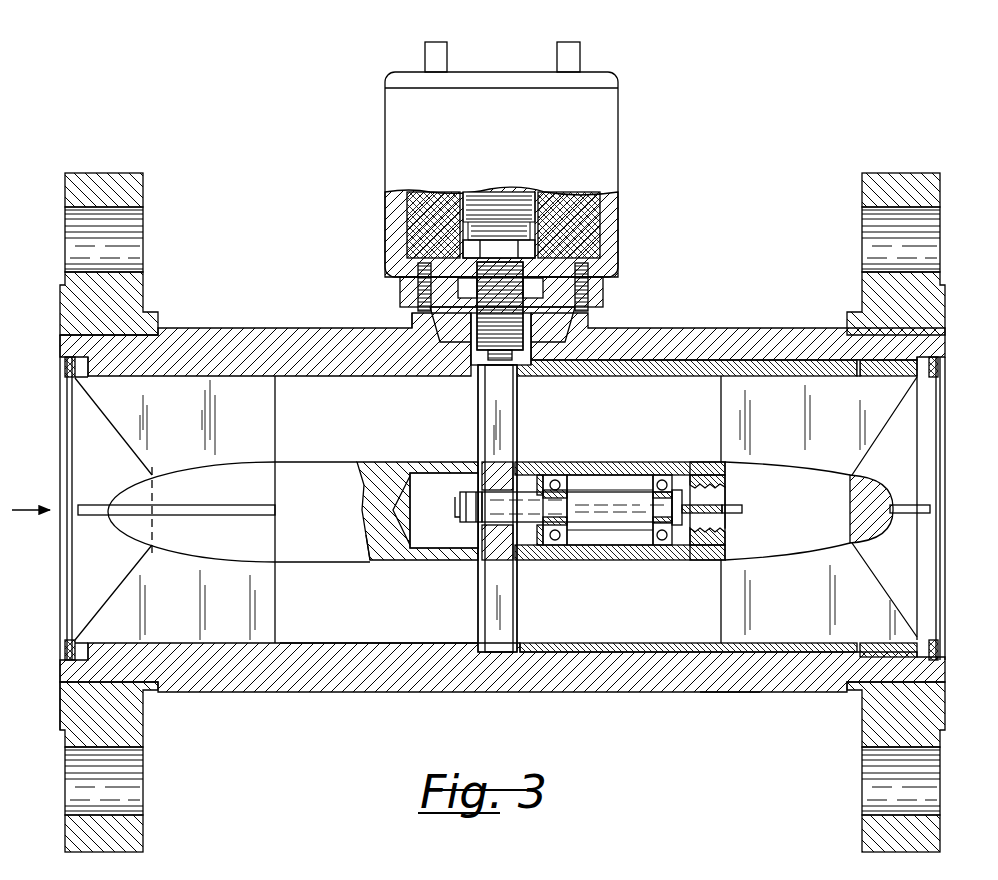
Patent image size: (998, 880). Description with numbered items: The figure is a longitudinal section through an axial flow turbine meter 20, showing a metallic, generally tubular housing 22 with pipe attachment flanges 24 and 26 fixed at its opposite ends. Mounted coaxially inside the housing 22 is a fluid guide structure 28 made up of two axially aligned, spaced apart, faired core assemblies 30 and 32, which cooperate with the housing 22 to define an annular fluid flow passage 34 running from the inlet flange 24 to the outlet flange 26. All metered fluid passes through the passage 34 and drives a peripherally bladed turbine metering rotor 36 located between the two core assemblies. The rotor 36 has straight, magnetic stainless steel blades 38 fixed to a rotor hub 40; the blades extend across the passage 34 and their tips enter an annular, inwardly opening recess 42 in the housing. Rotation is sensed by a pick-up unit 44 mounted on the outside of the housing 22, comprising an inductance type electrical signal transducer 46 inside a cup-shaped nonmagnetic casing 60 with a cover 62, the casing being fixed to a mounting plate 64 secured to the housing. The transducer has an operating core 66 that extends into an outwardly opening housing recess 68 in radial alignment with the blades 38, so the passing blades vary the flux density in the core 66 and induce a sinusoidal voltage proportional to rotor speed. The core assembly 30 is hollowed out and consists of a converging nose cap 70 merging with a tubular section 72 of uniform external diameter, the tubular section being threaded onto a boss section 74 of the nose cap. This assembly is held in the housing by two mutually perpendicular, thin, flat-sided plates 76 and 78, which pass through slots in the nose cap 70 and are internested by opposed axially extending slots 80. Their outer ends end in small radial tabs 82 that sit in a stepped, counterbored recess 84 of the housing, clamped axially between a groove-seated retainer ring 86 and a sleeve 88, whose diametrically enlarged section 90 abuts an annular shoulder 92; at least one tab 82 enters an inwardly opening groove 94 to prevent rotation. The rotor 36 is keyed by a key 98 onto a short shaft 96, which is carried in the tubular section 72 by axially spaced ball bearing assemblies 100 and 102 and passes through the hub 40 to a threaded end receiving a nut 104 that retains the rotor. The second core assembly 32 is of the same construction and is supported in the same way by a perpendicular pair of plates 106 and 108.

The axial flow turbine meter 20 is at (627, 694).
The housing 22 is at (732, 685).
The pipe attachment flange 24 is at (143, 835).
The pipe attachment flange 26 is at (940, 836).
The fluid guide structure 28 is at (390, 460).
The core assembly 30 is at (636, 550).
The core assembly 32 is at (378, 562).
The annular fluid flow passage 34 is at (445, 626).
The turbine metering rotor 36 is at (519, 619).
The rotor blade 38 is at (514, 596).
The rotor hub 40 is at (500, 470).
The recess 42 is at (492, 650).
The pick-up unit 44 is at (384, 208).
The electrical signal transducer 46 is at (477, 326).
The casing 60 is at (615, 128).
The cover 62 is at (612, 80).
The mounting plate 64 is at (603, 290).
The operating core 66 is at (505, 360).
The housing recess 68 is at (468, 348).
The nose cap 70 is at (878, 526).
The tubular section 72 is at (630, 462).
The boss section 74 is at (694, 470).
The plate 76 is at (790, 591).
The plate 78 is at (745, 509).
The slot 80 is at (722, 511).
The radial tab 82 is at (70, 368).
The stepped counterbored recess 84 is at (915, 647).
The retainer ring 86 is at (68, 445).
The sleeve 88 is at (775, 376).
The diametrically enlarged section 90 is at (880, 376).
The annular shoulder 92 is at (858, 372).
The groove 94 is at (945, 337).
The shaft 96 is at (610, 522).
The key 98 is at (550, 480).
The ball bearing assembly 100 is at (543, 480).
The ball bearing assembly 102 is at (664, 548).
The nut 104 is at (461, 512).
The plate 106 is at (208, 609).
The plate 108 is at (95, 512).